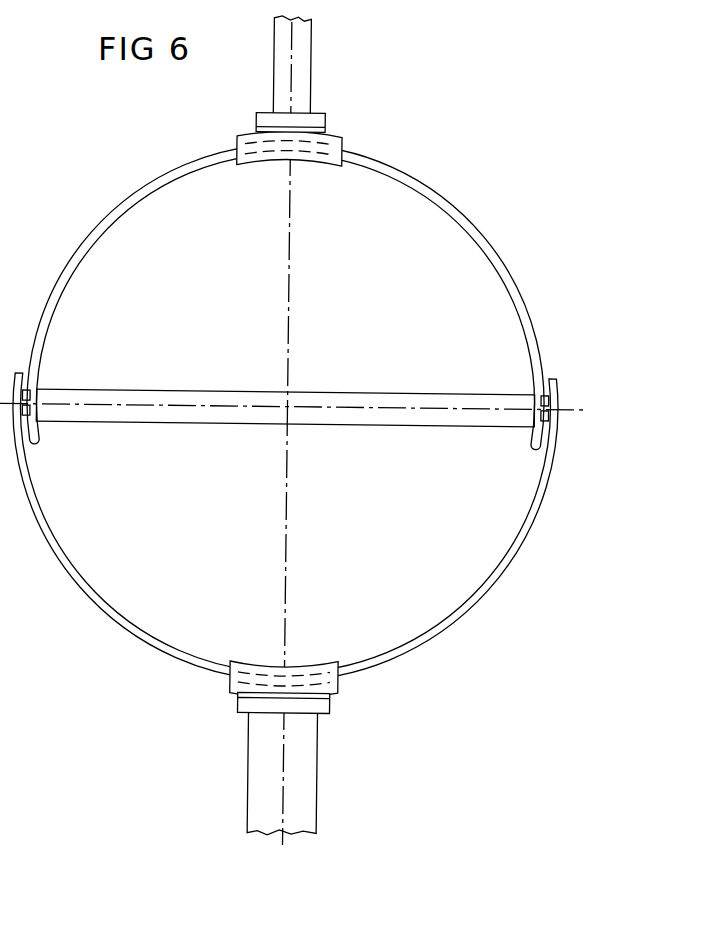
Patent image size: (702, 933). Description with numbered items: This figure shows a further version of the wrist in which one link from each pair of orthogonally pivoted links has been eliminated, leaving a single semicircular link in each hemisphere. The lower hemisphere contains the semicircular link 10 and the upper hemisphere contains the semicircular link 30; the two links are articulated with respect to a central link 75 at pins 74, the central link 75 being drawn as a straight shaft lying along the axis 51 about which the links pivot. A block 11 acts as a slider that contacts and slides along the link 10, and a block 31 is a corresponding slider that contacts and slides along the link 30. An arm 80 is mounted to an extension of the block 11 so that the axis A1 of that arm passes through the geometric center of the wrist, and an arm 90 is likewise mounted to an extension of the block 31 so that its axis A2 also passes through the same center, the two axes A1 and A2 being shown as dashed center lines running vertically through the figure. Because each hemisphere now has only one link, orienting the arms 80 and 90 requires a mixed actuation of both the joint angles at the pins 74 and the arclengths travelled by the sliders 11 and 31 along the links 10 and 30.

The semicircular link 10 is at (423, 642).
The block 11 is at (323, 687).
The semicircular link 30 is at (449, 210).
The block 31 is at (326, 148).
The axis 51 is at (173, 406).
The pins 74 is at (28, 405).
The central link 75 is at (375, 416).
The arm 80 is at (307, 767).
The arm 90 is at (294, 64).
The axis of the arm A1 is at (287, 558).
The axis of the arm A2 is at (288, 275).